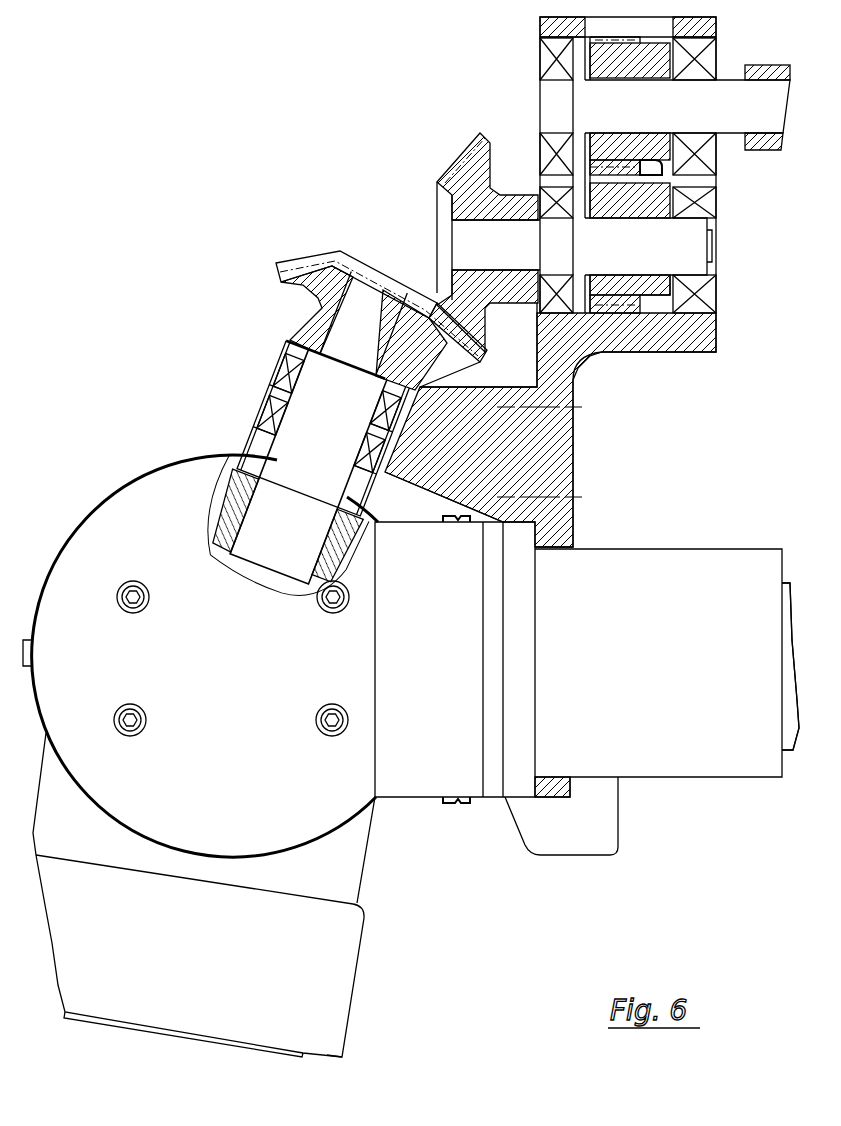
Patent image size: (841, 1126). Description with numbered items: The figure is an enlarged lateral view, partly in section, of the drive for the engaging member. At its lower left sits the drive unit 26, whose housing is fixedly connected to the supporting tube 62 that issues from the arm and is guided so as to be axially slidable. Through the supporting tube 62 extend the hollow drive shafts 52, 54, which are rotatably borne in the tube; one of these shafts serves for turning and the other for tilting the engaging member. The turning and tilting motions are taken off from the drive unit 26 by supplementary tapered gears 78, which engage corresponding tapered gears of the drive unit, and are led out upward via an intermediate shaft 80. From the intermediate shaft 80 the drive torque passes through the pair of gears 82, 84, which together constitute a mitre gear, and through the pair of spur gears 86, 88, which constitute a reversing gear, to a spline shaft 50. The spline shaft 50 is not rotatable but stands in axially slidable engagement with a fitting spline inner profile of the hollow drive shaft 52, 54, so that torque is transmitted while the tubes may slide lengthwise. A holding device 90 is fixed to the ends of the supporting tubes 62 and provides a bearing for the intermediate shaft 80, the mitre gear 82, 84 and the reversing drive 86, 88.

The drive unit 26 is at (300, 823).
The spline shaft 50 is at (770, 65).
The hollow drive shaft 52 is at (793, 737).
The hollow drive shaft 54 is at (790, 666).
The supporting tube 62 is at (670, 572).
The supplementary tapered gear 78 is at (222, 497).
The intermediate shaft 80 is at (313, 460).
The mitre gear 82 is at (307, 260).
The mitre gear 84 is at (453, 168).
The spur gear 86 is at (645, 292).
The spur gear 88 is at (647, 157).
The holding device 90 is at (563, 373).